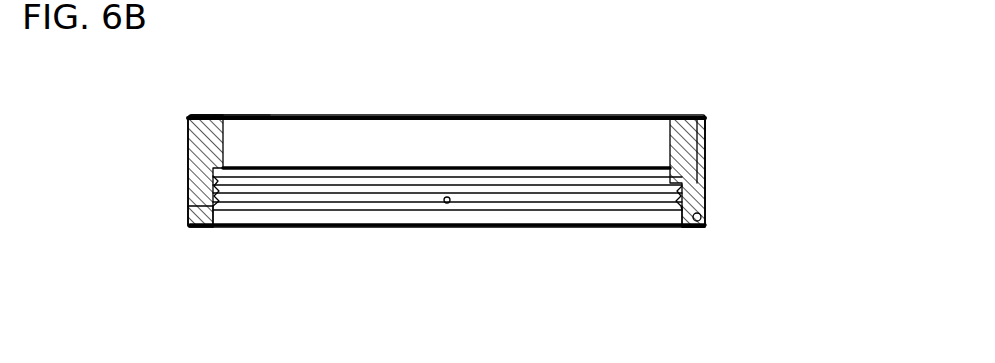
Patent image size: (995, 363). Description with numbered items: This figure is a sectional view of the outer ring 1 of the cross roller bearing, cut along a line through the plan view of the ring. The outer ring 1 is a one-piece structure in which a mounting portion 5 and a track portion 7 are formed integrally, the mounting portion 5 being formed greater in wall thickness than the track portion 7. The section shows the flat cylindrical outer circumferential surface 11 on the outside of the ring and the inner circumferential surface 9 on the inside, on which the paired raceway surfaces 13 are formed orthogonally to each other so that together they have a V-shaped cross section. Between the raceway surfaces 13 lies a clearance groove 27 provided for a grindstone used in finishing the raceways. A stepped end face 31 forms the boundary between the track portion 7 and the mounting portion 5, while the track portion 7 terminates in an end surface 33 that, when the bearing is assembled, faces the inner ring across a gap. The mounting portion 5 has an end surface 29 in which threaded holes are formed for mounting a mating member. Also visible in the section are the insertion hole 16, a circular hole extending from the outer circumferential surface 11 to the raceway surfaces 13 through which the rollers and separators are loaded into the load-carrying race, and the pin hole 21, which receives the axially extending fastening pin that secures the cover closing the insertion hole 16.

The outer ring 1 is at (572, 108).
The mounting portion 5 is at (188, 118).
The track portion 7 is at (188, 208).
The inner circumferential surface 9 is at (223, 143).
The outer circumferential surface 11 is at (188, 155).
The raceway surfaces 13 is at (188, 174).
The insertion hole 16 is at (702, 210).
The pin hole 21 is at (707, 126).
The clearance groove 27 is at (473, 198).
The end surface 29 is at (268, 117).
The stepped end face 31 is at (373, 171).
The end surface 33 is at (262, 227).